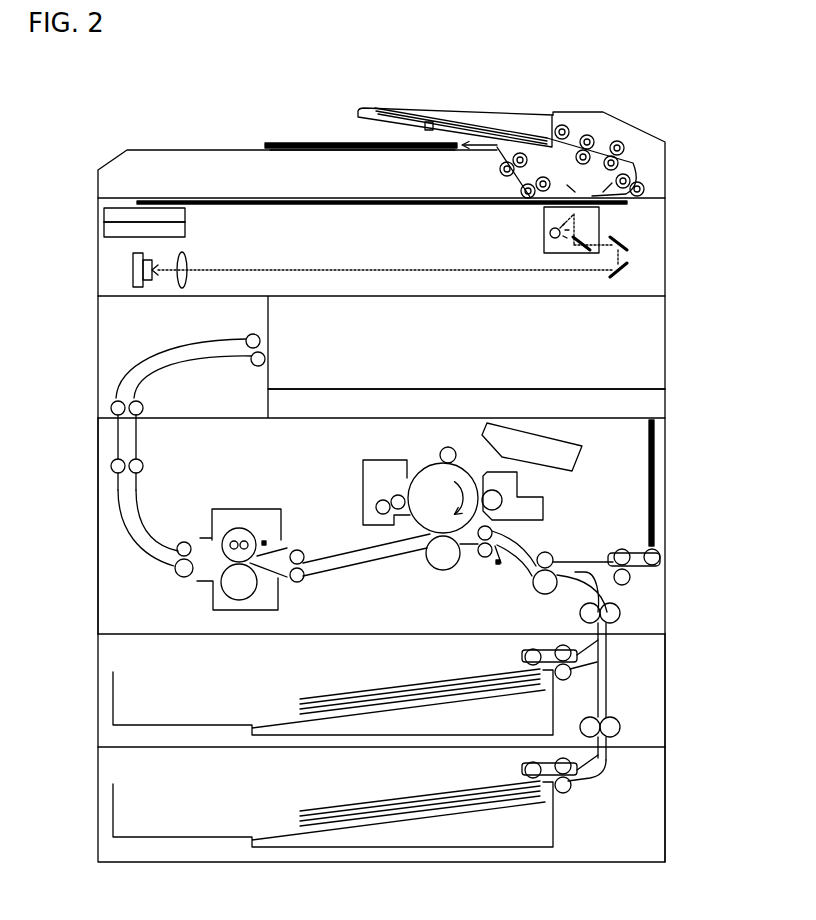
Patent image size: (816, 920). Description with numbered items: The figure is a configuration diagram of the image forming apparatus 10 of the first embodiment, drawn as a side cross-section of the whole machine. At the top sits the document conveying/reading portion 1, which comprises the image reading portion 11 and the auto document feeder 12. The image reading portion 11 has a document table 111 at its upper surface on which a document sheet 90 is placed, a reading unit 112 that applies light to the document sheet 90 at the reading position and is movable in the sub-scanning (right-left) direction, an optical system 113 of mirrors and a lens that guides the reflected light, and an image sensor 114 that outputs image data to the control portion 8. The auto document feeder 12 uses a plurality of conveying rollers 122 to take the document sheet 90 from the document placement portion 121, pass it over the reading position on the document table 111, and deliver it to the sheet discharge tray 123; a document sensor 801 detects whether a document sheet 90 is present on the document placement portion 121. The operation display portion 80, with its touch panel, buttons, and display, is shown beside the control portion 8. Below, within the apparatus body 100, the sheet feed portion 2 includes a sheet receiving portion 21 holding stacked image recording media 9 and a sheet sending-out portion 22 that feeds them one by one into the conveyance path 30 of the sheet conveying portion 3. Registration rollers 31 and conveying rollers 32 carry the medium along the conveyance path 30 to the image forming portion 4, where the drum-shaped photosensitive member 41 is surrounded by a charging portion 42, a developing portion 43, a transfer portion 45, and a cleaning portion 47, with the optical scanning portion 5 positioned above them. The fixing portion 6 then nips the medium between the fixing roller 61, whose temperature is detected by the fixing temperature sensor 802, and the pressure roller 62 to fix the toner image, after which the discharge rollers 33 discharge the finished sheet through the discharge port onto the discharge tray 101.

The document conveying/reading portion 1 is at (745, 186).
The sheet feed portion 2 is at (665, 713).
The sheet conveying portion 3 is at (634, 600).
The image forming portion 4 is at (338, 493).
The optical scanning portion 5 is at (580, 460).
The fixing portion 6 is at (195, 598).
The control portion 8 is at (104, 230).
The image recording medium 9 is at (363, 693).
The image forming apparatus 10 is at (104, 104).
The image reading portion 11 is at (674, 250).
The auto document feeder 12 is at (674, 182).
The sheet receiving portion 21 is at (112, 682).
The sheet sending-out portion 22 is at (579, 680).
The conveyance path 30 is at (525, 568).
The registration rollers 31 is at (495, 530).
The conveying rollers 32 is at (620, 621).
The discharge rollers 33 is at (247, 336).
The photosensitive member 41 is at (430, 467).
The charging portion 42 is at (457, 455).
The developing portion 43 is at (517, 480).
The transfer portion 45 is at (450, 570).
The cleaning portion 47 is at (385, 460).
The fixing roller 61 is at (228, 531).
The pressure roller 62 is at (258, 597).
The operation display portion 80 is at (104, 213).
The document sheet 90 is at (322, 143).
The apparatus body 100 is at (98, 467).
The discharge tray 101 is at (480, 389).
The document table 111 is at (415, 205).
The reading unit 112 is at (544, 237).
The optical system 113 is at (627, 277).
The image sensor 114 is at (136, 288).
The document placement portion 121 is at (500, 113).
The conveying rollers 122 is at (587, 135).
The sheet discharge tray 123 is at (266, 146).
The document sensor 801 is at (424, 125).
The fixing temperature sensor 802 is at (268, 542).